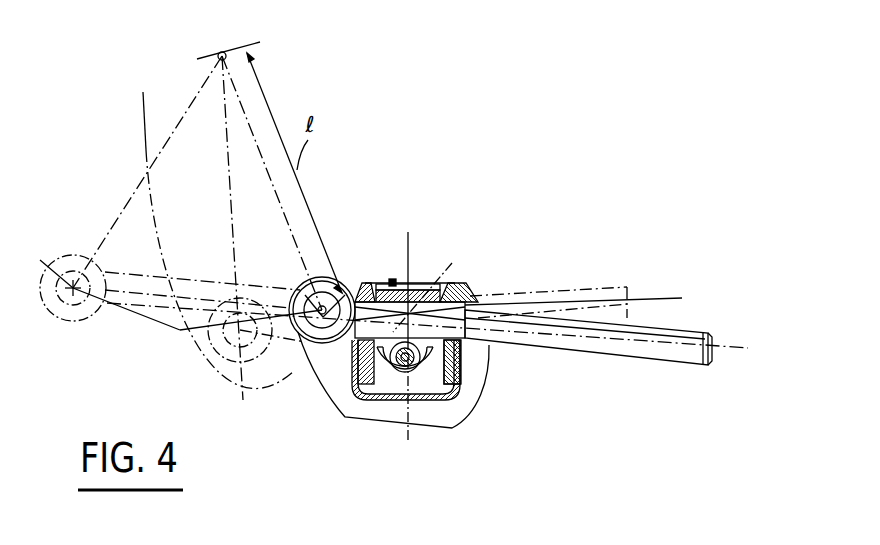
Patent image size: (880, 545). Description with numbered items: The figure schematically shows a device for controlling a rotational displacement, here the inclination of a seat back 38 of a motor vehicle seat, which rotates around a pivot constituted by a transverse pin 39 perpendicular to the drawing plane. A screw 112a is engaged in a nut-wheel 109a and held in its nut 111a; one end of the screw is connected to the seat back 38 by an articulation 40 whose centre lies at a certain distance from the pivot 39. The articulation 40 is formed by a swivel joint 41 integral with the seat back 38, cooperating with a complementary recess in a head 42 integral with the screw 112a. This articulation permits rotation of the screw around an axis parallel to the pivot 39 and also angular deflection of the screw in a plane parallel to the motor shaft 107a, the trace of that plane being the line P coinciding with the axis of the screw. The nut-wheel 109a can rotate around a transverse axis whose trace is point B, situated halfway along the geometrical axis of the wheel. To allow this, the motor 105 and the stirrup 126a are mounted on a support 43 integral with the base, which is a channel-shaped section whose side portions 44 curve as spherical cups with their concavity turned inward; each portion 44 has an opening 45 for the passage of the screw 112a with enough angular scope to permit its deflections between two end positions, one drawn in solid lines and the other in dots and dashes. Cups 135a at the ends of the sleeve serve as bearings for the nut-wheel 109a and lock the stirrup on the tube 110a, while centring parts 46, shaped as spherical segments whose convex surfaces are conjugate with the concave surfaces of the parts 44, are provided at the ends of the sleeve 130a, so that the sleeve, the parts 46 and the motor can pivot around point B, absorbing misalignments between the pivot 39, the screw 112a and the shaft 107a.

The seat back 38 is at (144, 136).
The transverse pin 39 is at (218, 56).
The articulation 40 is at (305, 295).
The swivel joint 41 is at (292, 356).
The head 42 is at (322, 345).
The support 43 is at (384, 412).
The side portion 44 is at (458, 285).
The opening 45 is at (470, 295).
The centring part 46 is at (362, 284).
The motor 105 is at (460, 397).
The motor shaft 107a is at (412, 372).
The nut-wheel 109a is at (392, 280).
The tube 110a is at (373, 400).
The nut 111a is at (360, 373).
The screw 112a is at (553, 325).
The stirrup 126a is at (450, 372).
The sleeve 130a is at (452, 375).
The cup 135a is at (420, 287).
The point B is at (432, 286).
The line P is at (735, 332).